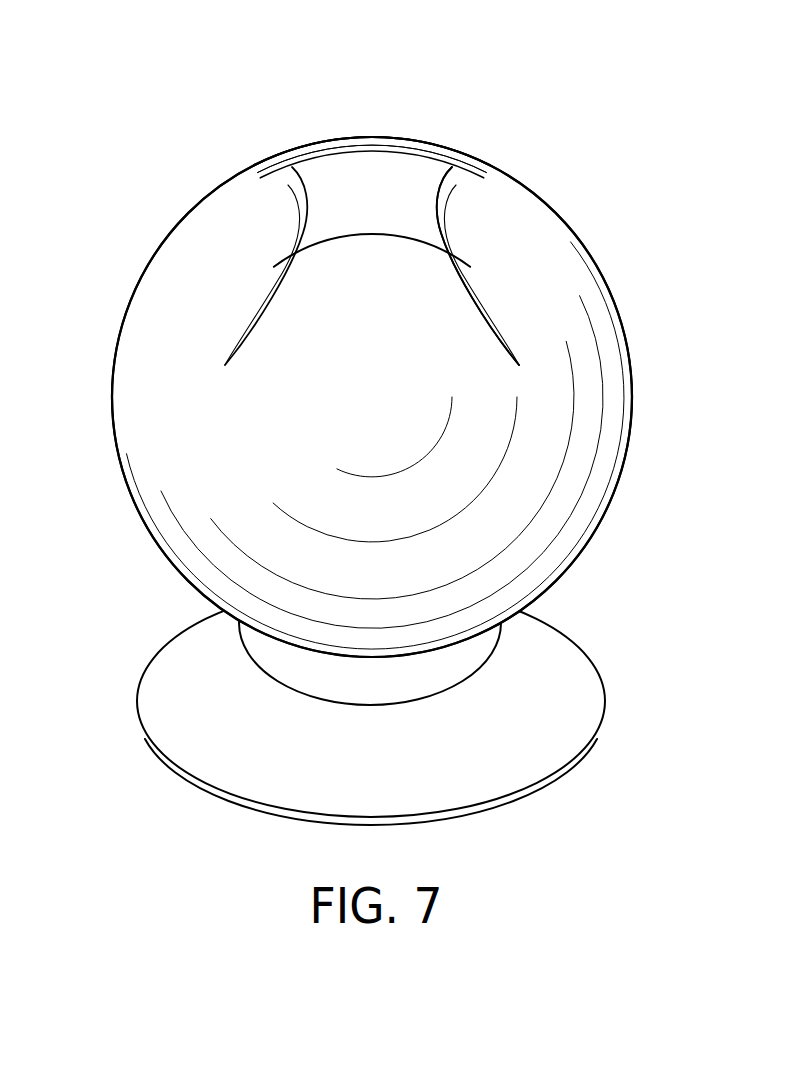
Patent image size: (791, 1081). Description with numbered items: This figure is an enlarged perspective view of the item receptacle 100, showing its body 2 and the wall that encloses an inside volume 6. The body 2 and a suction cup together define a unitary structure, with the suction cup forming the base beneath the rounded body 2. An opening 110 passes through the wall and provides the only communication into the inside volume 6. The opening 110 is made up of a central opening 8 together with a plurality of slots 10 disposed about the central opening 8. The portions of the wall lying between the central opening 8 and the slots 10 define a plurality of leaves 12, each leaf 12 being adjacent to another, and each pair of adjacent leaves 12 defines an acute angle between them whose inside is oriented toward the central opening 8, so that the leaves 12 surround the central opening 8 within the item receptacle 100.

The body 2 is at (112, 434).
The inside volume 6 is at (340, 183).
The central opening 8 is at (423, 222).
The slots 10 is at (257, 300).
The leaves 12 is at (357, 332).
The item receptacle 100 is at (568, 512).
The opening 110 is at (402, 183).